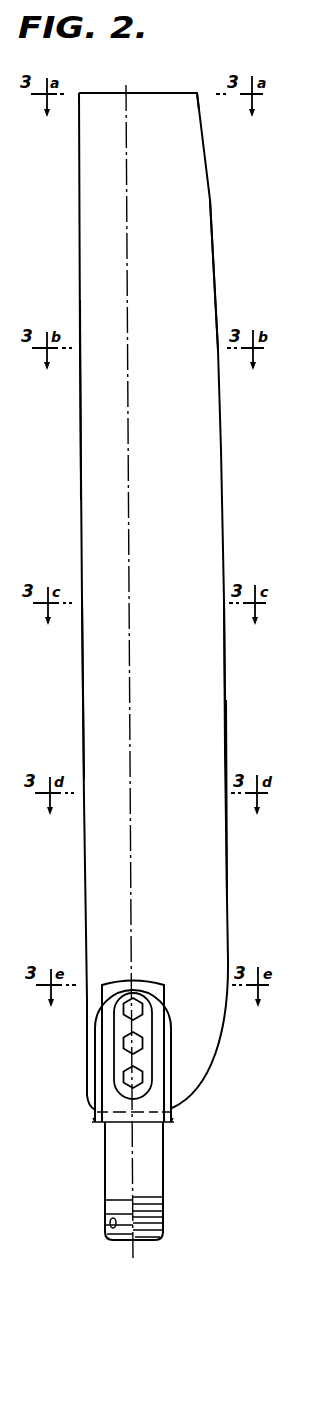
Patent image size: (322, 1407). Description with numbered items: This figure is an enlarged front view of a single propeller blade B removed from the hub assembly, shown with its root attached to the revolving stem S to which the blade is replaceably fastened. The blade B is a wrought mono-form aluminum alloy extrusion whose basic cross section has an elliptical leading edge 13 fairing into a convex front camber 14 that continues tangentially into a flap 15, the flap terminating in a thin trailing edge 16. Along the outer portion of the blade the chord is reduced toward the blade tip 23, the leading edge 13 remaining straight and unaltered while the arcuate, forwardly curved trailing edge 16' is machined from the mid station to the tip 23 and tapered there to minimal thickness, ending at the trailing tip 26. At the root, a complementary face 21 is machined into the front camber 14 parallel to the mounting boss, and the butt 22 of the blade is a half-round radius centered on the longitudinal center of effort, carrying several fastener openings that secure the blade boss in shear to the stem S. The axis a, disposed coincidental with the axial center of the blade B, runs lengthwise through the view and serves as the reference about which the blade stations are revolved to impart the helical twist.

The propeller blade B is at (76, 168).
The leading edge 13 is at (80, 408).
The front camber 14 is at (116, 689).
The flap 15 is at (199, 689).
The trailing edge 16 is at (255, 800).
The arcuate forwardly curved trailing edge 16' is at (240, 275).
The complementary face 21 is at (150, 994).
The butt 22 is at (160, 1114).
The blade tip 23 is at (163, 93).
The trailing tip 26 is at (197, 93).
The axis a is at (134, 514).
The revolving stem S is at (166, 1172).